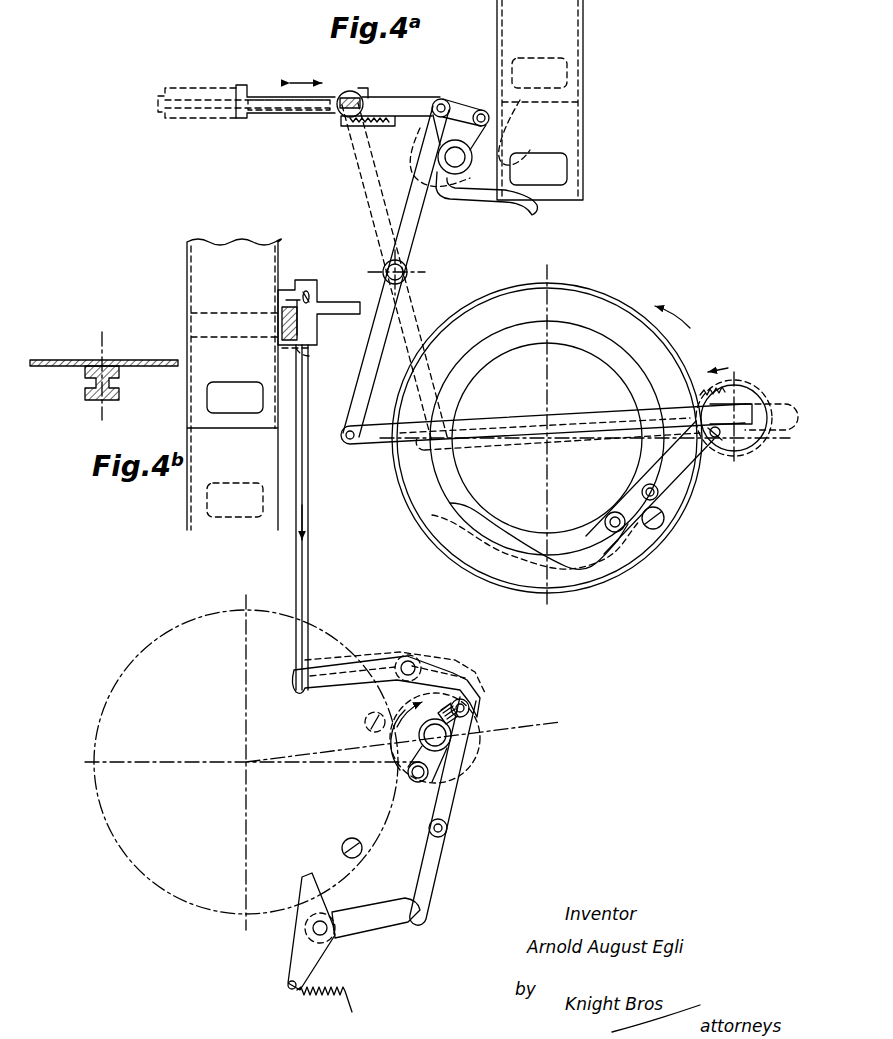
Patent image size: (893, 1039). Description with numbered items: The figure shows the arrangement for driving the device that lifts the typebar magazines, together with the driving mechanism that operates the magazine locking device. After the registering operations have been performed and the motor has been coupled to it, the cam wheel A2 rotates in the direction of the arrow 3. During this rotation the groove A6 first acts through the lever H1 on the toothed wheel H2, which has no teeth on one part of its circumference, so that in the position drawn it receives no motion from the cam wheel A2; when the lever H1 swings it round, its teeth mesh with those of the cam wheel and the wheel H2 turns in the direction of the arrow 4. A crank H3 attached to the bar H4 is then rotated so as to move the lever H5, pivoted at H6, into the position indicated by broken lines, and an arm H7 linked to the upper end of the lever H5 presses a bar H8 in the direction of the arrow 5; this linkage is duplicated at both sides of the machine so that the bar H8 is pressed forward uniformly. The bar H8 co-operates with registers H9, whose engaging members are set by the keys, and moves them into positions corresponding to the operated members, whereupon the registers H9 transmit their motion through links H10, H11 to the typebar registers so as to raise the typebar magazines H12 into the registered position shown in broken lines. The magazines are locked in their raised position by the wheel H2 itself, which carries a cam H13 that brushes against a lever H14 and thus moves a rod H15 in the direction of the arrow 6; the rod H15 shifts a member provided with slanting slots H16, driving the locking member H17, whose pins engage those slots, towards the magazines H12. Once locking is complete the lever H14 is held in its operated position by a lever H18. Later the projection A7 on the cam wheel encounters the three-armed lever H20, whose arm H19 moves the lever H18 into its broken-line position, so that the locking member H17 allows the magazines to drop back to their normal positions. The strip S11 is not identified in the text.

In FIG. 4A, the lever H1 is at (688, 458).
In FIG. 4A, the toothed wheel H2 is at (745, 425).
In FIG. 4A, the crank H3 is at (750, 405).
In FIG. 4A, the bar H4 is at (381, 438).
In FIG. 4A, the lever H5 is at (358, 375).
In FIG. 4A, the pivot H6 is at (408, 272).
In FIG. 4A, the arm H7 is at (375, 100).
In FIG. 4A, the bar H8 is at (349, 125).
In FIG. 4A, the register H9 is at (250, 118).
In FIG. 4A, the link H10 is at (462, 117).
In FIG. 4A, the link H11 is at (474, 210).
In FIG. 4A, the typebar magazine H12 is at (385, 265).
In FIG. 4A, the cam H13 is at (410, 760).
In FIG. 4A, the lever H14 is at (436, 672).
In FIG. 4A, the rod H15 is at (308, 572).
In FIG. 4A, the slanting slots H16 is at (312, 298).
In FIG. 4A, the locking member H17 is at (293, 340).
In FIG. 4A, the lever H18 is at (455, 810).
In FIG. 4A, the arm H19 is at (378, 910).
In FIG. 4A, the three-armed lever H20 is at (300, 952).
In FIG. 4A, the cam wheel A2 is at (535, 575).
In FIG. 4A, the groove A6 is at (600, 550).
In FIG. 4A, the pin or projection A7 is at (662, 525).
In FIG. 4B, the strip S11 is at (95, 362).
In FIG. 4A, the arrow 3 is at (672, 311).
In FIG. 4A, the arrow 4 is at (718, 357).
In FIG. 4A, the arrow 5 is at (306, 71).
In FIG. 4A, the arrow 6 is at (311, 522).